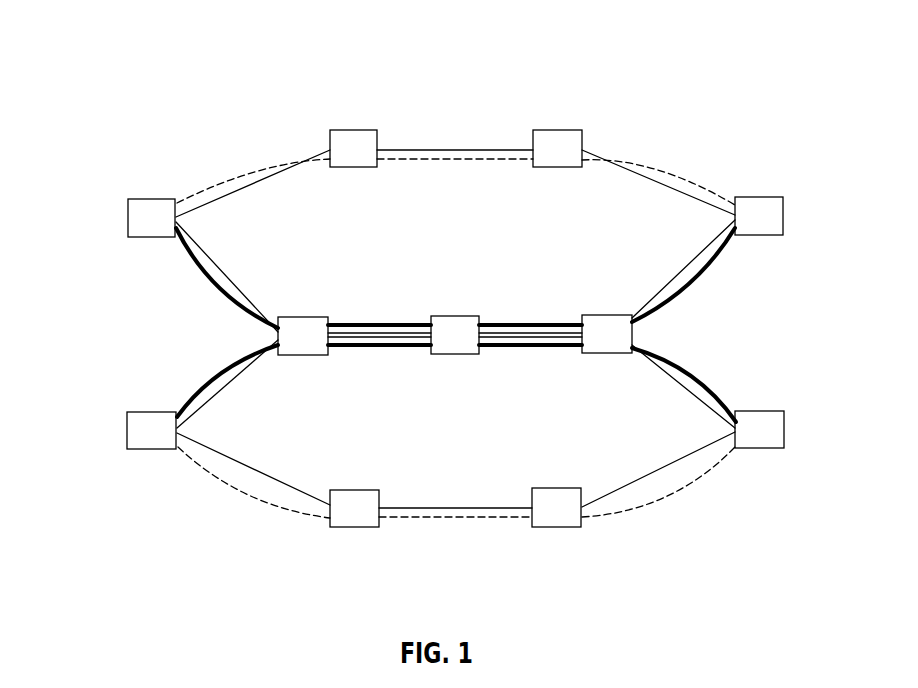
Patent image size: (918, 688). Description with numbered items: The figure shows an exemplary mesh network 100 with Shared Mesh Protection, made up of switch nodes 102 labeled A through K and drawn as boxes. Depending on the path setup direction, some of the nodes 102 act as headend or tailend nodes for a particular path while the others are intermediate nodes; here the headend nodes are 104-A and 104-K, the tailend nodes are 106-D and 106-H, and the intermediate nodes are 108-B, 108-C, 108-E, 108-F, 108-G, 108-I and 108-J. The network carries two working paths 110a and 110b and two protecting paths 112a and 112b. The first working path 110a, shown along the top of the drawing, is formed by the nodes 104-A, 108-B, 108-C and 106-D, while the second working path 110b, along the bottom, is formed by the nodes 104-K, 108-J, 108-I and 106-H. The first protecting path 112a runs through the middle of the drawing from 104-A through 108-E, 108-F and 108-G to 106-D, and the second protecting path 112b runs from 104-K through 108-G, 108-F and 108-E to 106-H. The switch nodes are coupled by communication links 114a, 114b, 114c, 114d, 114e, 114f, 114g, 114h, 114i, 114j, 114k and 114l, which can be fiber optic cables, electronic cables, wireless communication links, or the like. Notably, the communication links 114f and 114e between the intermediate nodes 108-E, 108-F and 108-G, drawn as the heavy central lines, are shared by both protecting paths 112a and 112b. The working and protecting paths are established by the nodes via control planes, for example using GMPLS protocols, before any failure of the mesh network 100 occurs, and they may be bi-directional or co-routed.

The mesh network 100 is at (116, 40).
The switch node 102 is at (136, 199).
The headend node 104-A is at (128, 225).
The headend node 104-K is at (768, 411).
The tailend node 106-H is at (140, 412).
The tailend node 106-D is at (768, 197).
The intermediate node 108-B is at (336, 130).
The intermediate node 108-C is at (566, 130).
The intermediate node 108-E is at (293, 317).
The intermediate node 108-F is at (468, 354).
The intermediate node 108-G is at (607, 353).
The intermediate node 108-I is at (344, 527).
The intermediate node 108-J is at (570, 527).
The working path 110a is at (485, 160).
The working path 110b is at (475, 517).
The protecting path 112a is at (405, 333).
The protecting path 112b is at (412, 346).
The communication link 114a is at (248, 177).
The communication link 114b is at (455, 150).
The communication link 114c is at (665, 178).
The communication link 114d is at (682, 274).
The communication link 114e is at (505, 325).
The communication link 114f is at (358, 338).
The communication link 114g is at (211, 268).
The communication link 114h is at (228, 375).
The communication link 114i is at (262, 483).
The communication link 114j is at (458, 508).
The communication link 114k is at (660, 466).
The communication link 114l is at (700, 400).